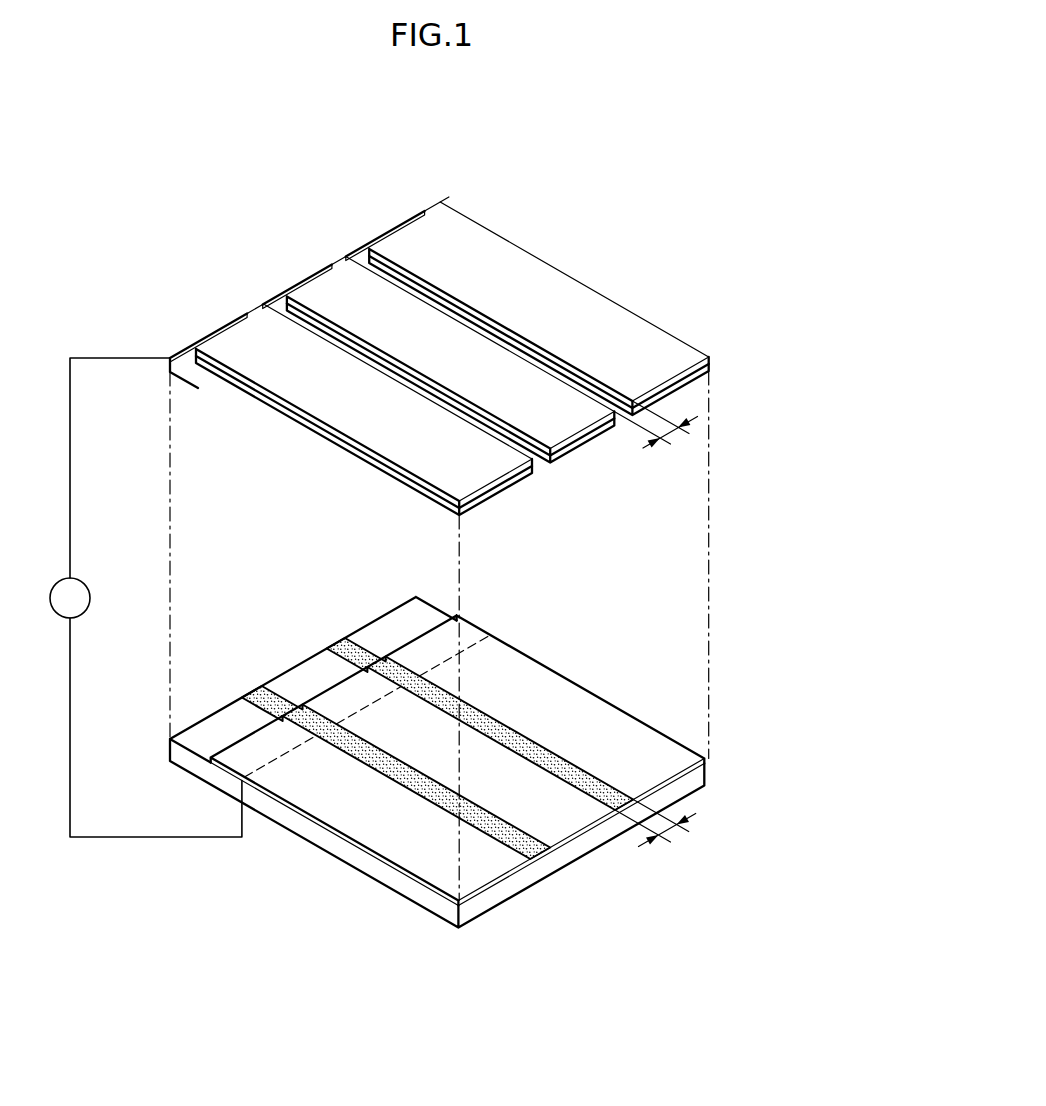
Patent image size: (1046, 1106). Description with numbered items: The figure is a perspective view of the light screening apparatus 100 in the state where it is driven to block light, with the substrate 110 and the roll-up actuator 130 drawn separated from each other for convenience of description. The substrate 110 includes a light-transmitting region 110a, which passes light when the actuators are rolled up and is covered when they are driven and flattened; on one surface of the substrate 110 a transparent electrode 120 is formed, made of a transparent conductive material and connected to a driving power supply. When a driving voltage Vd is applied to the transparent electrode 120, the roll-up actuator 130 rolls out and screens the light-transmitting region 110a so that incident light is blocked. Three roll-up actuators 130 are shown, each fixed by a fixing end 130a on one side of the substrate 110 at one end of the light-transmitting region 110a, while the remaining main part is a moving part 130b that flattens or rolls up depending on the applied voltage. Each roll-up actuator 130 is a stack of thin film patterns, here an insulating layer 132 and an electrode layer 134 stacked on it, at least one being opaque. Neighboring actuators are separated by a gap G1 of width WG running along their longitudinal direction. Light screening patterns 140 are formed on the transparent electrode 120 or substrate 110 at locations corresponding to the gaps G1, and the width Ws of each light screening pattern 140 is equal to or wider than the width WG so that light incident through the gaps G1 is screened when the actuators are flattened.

The light screening apparatus 100 is at (686, 252).
The substrate 110 is at (695, 782).
The light-transmitting region 110a is at (705, 756).
The transparent electrode 120 is at (382, 858).
The roll-up actuator 130 is at (779, 388).
The fixing end 130a is at (444, 204).
The moving part 130b is at (703, 352).
The insulating layer 132 is at (709, 369).
The electrode layer 134 is at (709, 356).
The light screening pattern 140 is at (578, 790).
The gap G1 is at (507, 342).
The driving voltage Vd is at (146, 597).
The width of gap WG is at (655, 443).
The width of light screening pattern Ws is at (655, 840).